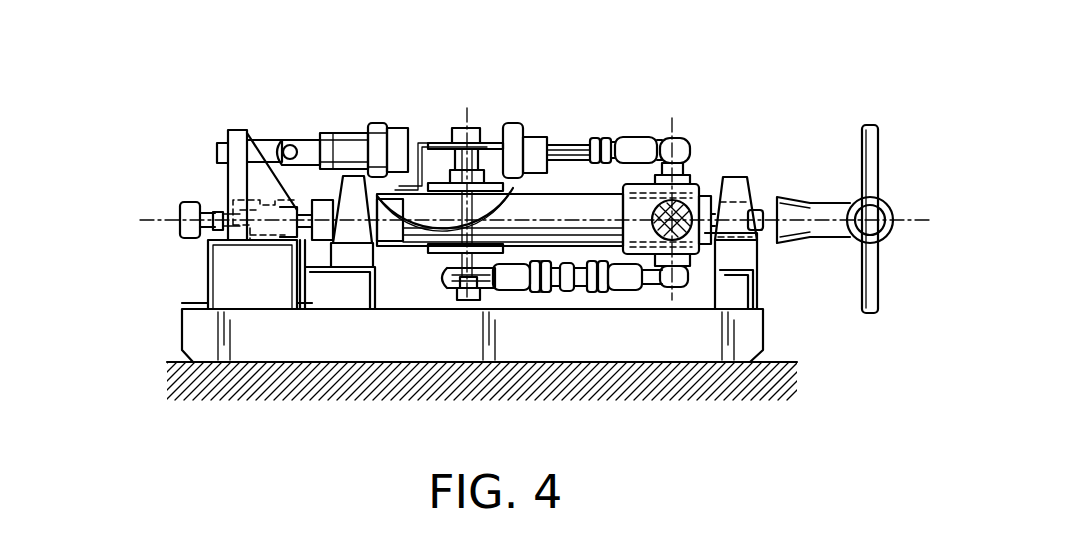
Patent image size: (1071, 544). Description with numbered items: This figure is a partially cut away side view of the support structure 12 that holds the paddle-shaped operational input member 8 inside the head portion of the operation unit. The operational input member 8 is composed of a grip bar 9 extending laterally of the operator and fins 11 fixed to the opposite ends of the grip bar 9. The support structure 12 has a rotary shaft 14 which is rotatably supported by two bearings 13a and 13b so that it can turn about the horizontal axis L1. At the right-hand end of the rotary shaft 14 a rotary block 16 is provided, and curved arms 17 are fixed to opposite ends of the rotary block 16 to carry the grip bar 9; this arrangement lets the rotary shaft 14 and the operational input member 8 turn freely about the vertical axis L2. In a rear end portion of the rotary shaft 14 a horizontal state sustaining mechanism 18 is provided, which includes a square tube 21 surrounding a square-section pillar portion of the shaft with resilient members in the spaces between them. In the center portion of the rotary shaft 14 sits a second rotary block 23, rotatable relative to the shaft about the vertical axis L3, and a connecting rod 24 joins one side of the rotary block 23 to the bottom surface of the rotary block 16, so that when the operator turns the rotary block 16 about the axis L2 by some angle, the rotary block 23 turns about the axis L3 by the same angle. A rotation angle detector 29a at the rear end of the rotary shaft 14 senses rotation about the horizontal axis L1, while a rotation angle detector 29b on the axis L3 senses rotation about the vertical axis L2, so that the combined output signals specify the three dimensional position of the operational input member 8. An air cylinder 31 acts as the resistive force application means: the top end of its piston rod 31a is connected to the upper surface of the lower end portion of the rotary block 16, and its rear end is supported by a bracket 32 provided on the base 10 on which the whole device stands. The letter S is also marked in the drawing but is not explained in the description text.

The operational input member 8 is at (876, 211).
The grip bar 9 is at (893, 205).
The base 10 is at (412, 357).
The fins 11 is at (870, 152).
The support structure 12 is at (292, 118).
The bearing 13a is at (740, 193).
The bearing 13b is at (353, 190).
The rotary shaft 14 is at (572, 205).
The rotary block 16 is at (697, 187).
The curved arms 17 is at (655, 240).
The horizontal state sustaining mechanism 18 is at (268, 240).
The square tube 21 is at (250, 200).
The rotary block 23 is at (443, 250).
The connecting rod 24 is at (548, 292).
The rotation angle detector 29a is at (188, 233).
The rotation angle detector 29b is at (456, 134).
The air cylinder 31 is at (400, 136).
The piston rod 31a is at (624, 148).
The bracket 32 is at (233, 180).
The horizontal axis L1 is at (150, 217).
The vertical axis L2 is at (673, 118).
The vertical axis L3 is at (469, 118).
The shaft S is at (700, 237).